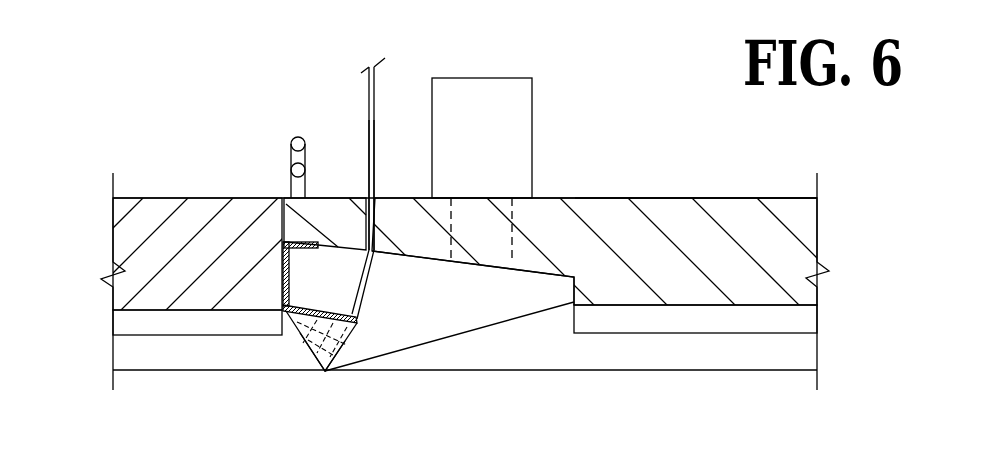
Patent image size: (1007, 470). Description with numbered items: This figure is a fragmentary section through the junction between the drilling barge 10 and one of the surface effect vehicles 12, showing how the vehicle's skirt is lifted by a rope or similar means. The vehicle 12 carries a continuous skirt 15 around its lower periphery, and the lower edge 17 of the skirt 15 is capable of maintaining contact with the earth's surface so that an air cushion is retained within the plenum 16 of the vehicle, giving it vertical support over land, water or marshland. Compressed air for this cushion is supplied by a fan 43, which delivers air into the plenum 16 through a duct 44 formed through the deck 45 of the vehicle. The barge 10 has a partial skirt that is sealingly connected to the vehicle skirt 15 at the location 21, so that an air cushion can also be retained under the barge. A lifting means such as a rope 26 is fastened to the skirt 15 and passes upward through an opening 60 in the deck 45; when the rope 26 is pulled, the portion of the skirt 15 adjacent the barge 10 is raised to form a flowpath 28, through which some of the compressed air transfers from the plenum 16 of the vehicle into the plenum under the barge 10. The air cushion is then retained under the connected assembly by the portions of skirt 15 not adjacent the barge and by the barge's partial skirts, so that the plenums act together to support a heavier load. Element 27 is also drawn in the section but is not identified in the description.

The drilling barge 10 is at (172, 198).
The surface effect vehicle 12 is at (788, 250).
The skirt 15 is at (470, 332).
The plenum 16 is at (690, 347).
The lower edge of skirt 17 is at (322, 374).
The sealing connection of partial skirt to vehicle skirt 21 is at (283, 220).
The rope 26 is at (368, 117).
The backing strip 27 is at (360, 320).
The flowpath 28 is at (297, 343).
The fan 43 is at (520, 78).
The duct 44 is at (513, 240).
The deck 45 is at (702, 197).
The opening in deck 60 is at (387, 200).